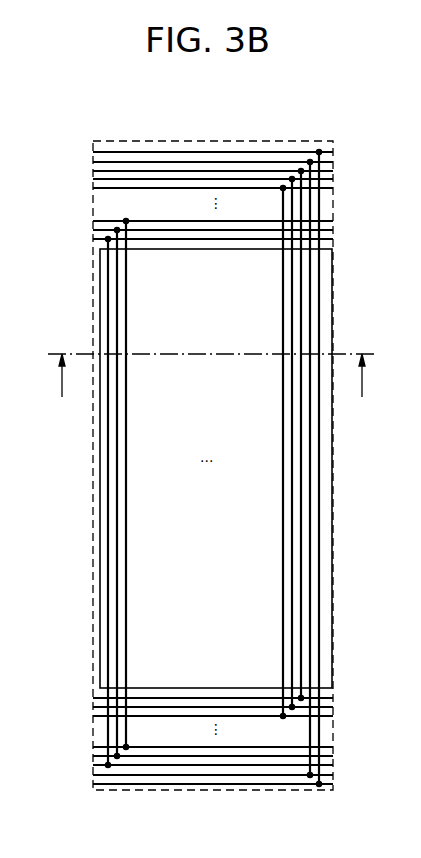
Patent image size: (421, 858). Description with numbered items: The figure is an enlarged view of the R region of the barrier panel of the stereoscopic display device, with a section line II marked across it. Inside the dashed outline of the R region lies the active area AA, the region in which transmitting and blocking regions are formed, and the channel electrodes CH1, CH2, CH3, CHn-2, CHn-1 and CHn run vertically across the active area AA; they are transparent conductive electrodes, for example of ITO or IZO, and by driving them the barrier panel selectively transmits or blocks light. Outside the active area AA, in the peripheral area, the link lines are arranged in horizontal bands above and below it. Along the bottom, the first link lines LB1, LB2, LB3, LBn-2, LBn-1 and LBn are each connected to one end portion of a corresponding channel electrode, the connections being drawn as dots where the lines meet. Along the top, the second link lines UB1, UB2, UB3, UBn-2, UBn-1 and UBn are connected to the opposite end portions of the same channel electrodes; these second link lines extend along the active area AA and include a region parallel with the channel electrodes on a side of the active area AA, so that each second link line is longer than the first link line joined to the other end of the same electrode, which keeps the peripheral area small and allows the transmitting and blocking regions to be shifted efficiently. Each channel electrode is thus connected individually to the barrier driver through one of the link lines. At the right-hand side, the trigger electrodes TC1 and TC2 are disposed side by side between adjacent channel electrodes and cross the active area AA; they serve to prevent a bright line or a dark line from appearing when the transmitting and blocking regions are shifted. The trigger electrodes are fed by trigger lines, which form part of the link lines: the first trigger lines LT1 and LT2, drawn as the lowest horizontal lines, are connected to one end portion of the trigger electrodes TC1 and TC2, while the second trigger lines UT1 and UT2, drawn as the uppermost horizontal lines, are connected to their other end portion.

The R region R is at (215, 140).
The active area AA is at (222, 512).
The section line II-II' II is at (211, 387).
The second trigger line UT2 is at (332, 152).
The second trigger line UT1 is at (332, 162).
The second link line UBn is at (97, 171).
The second link line UBn-1 is at (93, 179).
The second link line UBn-2 is at (93, 188).
The second link line UB3 is at (95, 221).
The second link line UB2 is at (95, 230).
The second link line UB1 is at (95, 239).
The first link line LBn is at (100, 698).
The first link line LBn-1 is at (100, 707).
The first link line LBn-2 is at (100, 716).
The first link line LB3 is at (136, 748).
The first link line LB2 is at (185, 757).
The first link line LB1 is at (228, 766).
The first trigger line LT1 is at (333, 775).
The first trigger line LT2 is at (333, 784).
The channel electrode CH1 is at (108, 497).
The channel electrode CH2 is at (117, 523).
The channel electrode CH3 is at (126, 550).
The channel electrode CHn-2 is at (283, 494).
The channel electrode CHn-1 is at (292, 527).
The channel electrode CHn is at (301, 559).
The trigger electrode TC1 is at (310, 586).
The trigger electrode TC2 is at (321, 612).